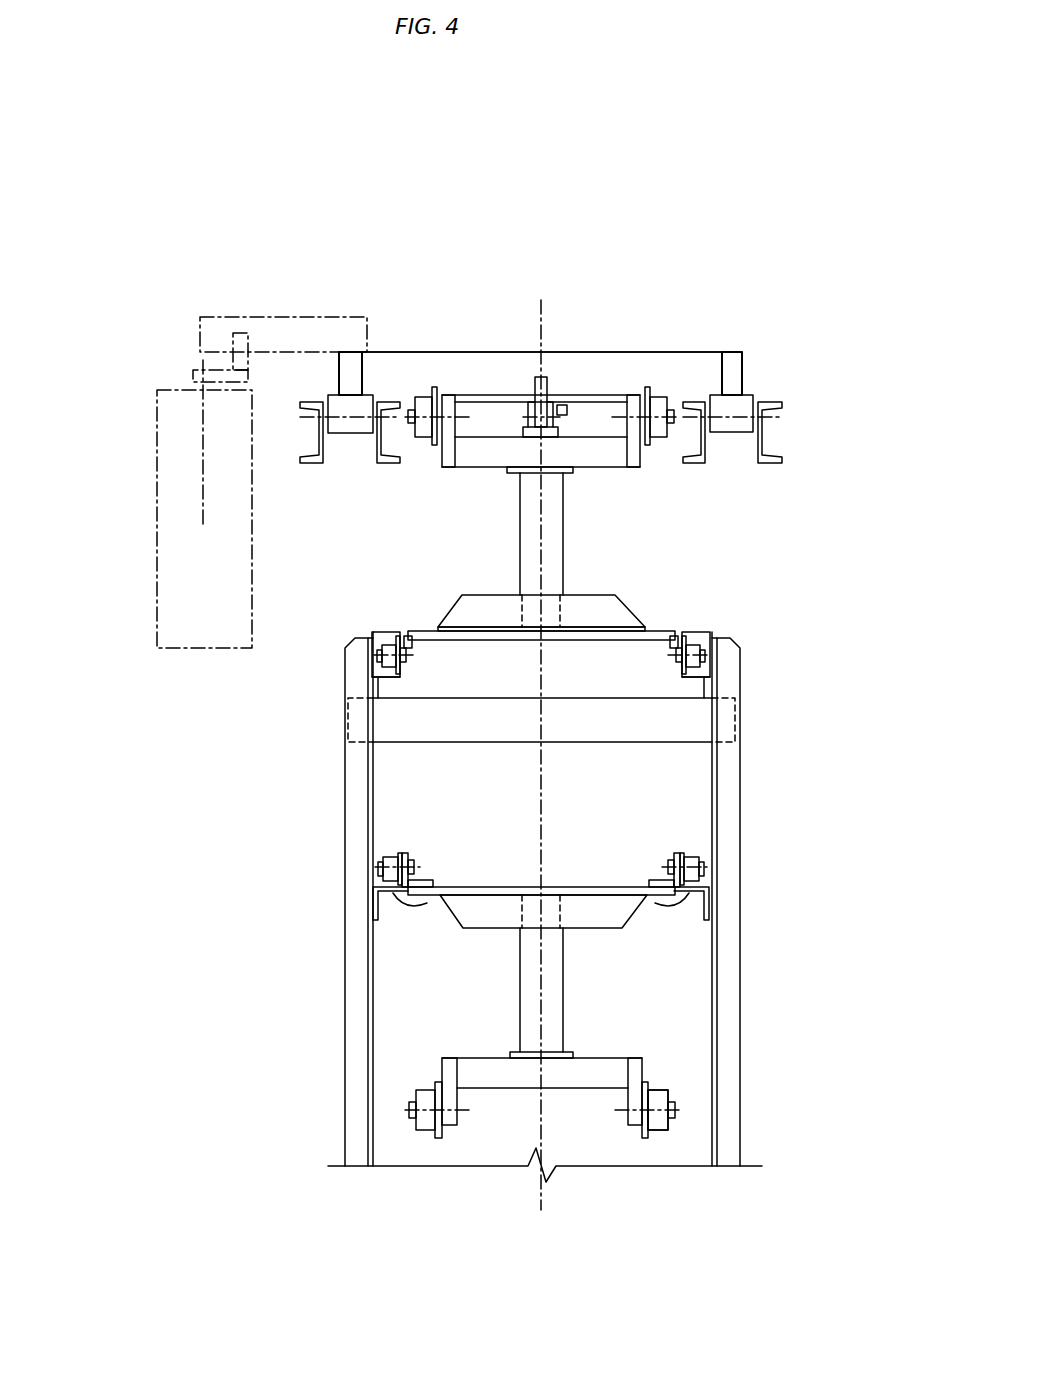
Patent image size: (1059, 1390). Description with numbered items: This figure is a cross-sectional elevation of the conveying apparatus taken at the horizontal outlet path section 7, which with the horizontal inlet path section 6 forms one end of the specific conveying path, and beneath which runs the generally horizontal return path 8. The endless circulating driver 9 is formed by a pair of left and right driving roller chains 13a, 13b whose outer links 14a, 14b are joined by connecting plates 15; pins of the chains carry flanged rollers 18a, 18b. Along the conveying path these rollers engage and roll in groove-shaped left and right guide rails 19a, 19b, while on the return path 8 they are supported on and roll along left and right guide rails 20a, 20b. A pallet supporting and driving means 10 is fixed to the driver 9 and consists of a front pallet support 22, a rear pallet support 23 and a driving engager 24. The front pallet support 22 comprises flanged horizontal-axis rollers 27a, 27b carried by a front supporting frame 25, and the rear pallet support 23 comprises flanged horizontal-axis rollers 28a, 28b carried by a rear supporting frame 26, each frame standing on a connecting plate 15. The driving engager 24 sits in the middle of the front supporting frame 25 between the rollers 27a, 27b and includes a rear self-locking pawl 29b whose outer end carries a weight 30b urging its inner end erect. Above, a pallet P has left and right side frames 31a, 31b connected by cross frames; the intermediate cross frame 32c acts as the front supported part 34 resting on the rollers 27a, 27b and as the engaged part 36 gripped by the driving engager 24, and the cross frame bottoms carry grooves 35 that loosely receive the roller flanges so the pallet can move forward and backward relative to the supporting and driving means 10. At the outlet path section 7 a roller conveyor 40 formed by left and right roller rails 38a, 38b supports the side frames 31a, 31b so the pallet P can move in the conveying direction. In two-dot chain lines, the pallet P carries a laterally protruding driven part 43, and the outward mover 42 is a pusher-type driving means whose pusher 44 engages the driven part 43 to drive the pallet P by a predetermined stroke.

The horizontal inlet path section 6 is at (580, 880).
The horizontal outlet path section 7 is at (722, 597).
The return path 8 is at (436, 934).
The endless circulating driver 9 is at (420, 608).
The pallet supporting and driving means 10 is at (575, 408).
The left driving roller chain 13a is at (370, 675).
The right driving roller chain 13b is at (705, 670).
The outer link 14a is at (412, 660).
The outer link 14b is at (670, 660).
The connecting plate 15 is at (475, 640).
The flanged roller 18a is at (400, 660).
The flanged roller 18b is at (712, 658).
The left guide rail 19a is at (395, 640).
The right guide rail 19b is at (688, 640).
The left guide rail 20a is at (412, 882).
The right guide rail 20b is at (675, 905).
The front pallet support 22 is at (426, 456).
The rear pallet support 23 is at (405, 1120).
The driving engager 24 is at (533, 372).
The front supporting frame 25 is at (555, 523).
The rear supporting frame 26 is at (563, 1000).
The flanged horizontal-axis roller 27a is at (420, 398).
The flanged horizontal-axis roller 27b is at (665, 398).
The flanged horizontal-axis roller 28a is at (425, 1125).
The flanged horizontal-axis roller 28b is at (665, 1098).
The rear self-locking pawl 29b is at (562, 400).
The weight 30b is at (530, 425).
The left side frame 31a is at (337, 362).
The right side frame 31b is at (745, 362).
The intermediate cross frame 32c is at (572, 272).
The front supported part 34 is at (572, 272).
The engaged part 36 is at (672, 352).
The groove 35 is at (440, 395).
The left roller rail 38a is at (325, 420).
The right roller rail 38b is at (753, 425).
The roller conveyor 40 is at (296, 420).
The outward mover 42 is at (175, 558).
The driven part 43 is at (258, 317).
The pusher 44 is at (232, 336).
The pallet P is at (492, 345).